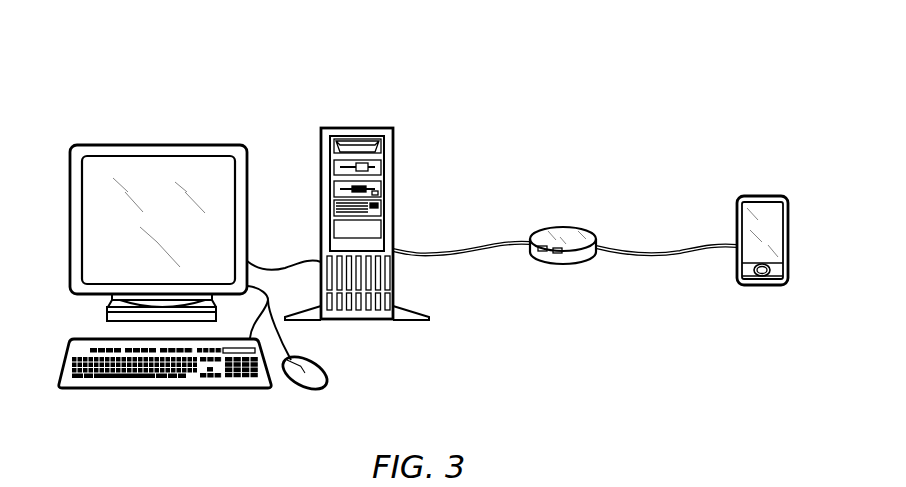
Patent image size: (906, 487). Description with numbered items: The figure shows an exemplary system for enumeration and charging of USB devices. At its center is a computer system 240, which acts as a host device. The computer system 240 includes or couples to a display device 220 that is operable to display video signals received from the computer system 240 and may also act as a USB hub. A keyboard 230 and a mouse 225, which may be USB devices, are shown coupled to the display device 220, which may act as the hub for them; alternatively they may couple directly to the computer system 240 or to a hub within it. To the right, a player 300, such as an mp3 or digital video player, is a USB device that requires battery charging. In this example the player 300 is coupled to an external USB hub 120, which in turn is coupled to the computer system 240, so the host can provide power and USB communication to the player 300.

The USB hub 120 is at (566, 227).
The display device 220 is at (142, 143).
The mouse 225 is at (317, 390).
The keyboard 230 is at (152, 389).
The computer system 240 is at (363, 127).
The player 300 is at (765, 196).